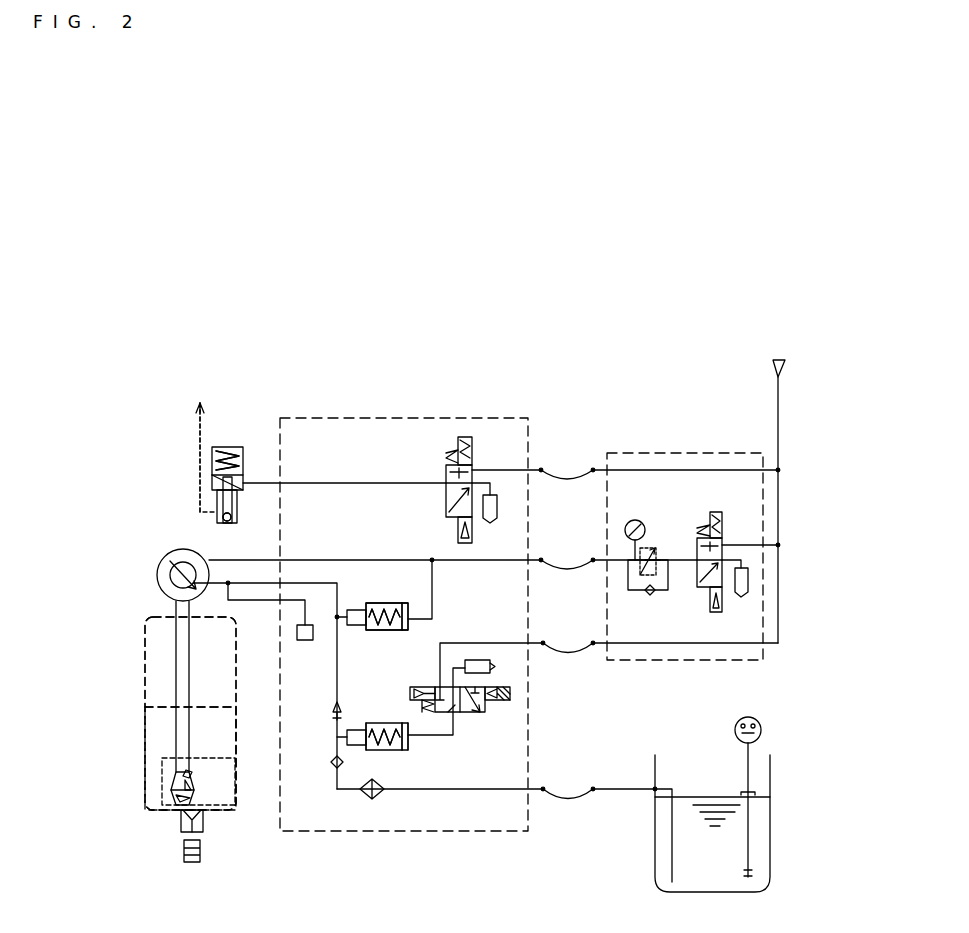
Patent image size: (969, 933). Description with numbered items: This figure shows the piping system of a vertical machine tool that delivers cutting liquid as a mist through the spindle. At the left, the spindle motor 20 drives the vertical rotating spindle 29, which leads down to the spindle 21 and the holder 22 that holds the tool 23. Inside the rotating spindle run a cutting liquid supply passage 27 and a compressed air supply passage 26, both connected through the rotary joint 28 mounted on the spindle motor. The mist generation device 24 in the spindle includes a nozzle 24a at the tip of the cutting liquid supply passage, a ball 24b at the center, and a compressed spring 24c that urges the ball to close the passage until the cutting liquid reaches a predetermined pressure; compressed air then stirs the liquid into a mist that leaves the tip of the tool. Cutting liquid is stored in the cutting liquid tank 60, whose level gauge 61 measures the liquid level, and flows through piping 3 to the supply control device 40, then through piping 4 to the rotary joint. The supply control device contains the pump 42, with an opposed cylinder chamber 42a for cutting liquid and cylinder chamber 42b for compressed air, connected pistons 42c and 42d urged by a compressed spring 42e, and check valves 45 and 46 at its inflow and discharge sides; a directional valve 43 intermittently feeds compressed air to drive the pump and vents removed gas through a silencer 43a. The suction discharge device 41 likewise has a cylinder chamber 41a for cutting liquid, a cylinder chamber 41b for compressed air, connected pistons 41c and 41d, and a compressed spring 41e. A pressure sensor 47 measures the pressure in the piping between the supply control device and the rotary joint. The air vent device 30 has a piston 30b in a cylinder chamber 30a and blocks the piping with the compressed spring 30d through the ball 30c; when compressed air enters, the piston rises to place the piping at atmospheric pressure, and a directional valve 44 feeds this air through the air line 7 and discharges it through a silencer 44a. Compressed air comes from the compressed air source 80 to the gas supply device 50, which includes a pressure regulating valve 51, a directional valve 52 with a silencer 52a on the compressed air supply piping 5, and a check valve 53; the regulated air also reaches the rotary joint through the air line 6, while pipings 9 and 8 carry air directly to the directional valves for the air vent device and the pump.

The piping 3 is at (565, 795).
The piping 4 is at (262, 575).
The compressed air supply piping 5 is at (567, 568).
The pump line 6 is at (264, 560).
The valve line 7 is at (264, 483).
The piping 8 is at (578, 652).
The piping 9 is at (580, 468).
The spindle motor 20 is at (122, 672).
The spindle 21 is at (129, 749).
The holder 22 is at (185, 838).
The tool 23 is at (188, 864).
The mist generation device 24 is at (162, 792).
The nozzle 24a is at (196, 800).
The ball 24b is at (192, 773).
The compressed spring 24c is at (192, 782).
The compressed air supply passage 26 is at (145, 628).
The cutting liquid supply passage 27 is at (176, 650).
The rotary joint 28 is at (157, 568).
The rotating spindle 29 is at (145, 705).
The air vent device 30 is at (238, 445).
The cylinder chamber 30a is at (212, 456).
The piston 30b is at (212, 484).
The ball 30c is at (217, 517).
The compressed spring 30d is at (200, 440).
The supply control device 40 is at (485, 415).
The suction discharge device 41 is at (386, 603).
The cylinder chamber 41a is at (370, 625).
The cylinder chamber 41b is at (408, 620).
The piston 41c is at (368, 630).
The piston 41d is at (404, 630).
The compressed spring 41e is at (385, 630).
The pump 42 is at (408, 750).
The cylinder chamber 42a is at (352, 745).
The cylinder chamber 42b is at (408, 750).
The piston 42c is at (366, 750).
The piston 42d is at (402, 750).
The compressed spring 42e is at (386, 750).
The directional valve 43 is at (475, 712).
The silencer 43a is at (490, 668).
The directional valve 44 is at (446, 478).
The silencer 44a is at (497, 510).
The check valve 45 is at (337, 770).
The check valve 46 is at (334, 708).
The pressure sensor 47 is at (297, 640).
The gas supply device 50 is at (763, 498).
The pressure regulating valve 51 is at (651, 521).
The directional valve 52 is at (722, 540).
The silencer 52a is at (748, 585).
The check valve 53 is at (650, 596).
The cutting liquid tank 60 is at (770, 785).
The level gauge 61 is at (762, 718).
The compressed air source 80 is at (778, 375).